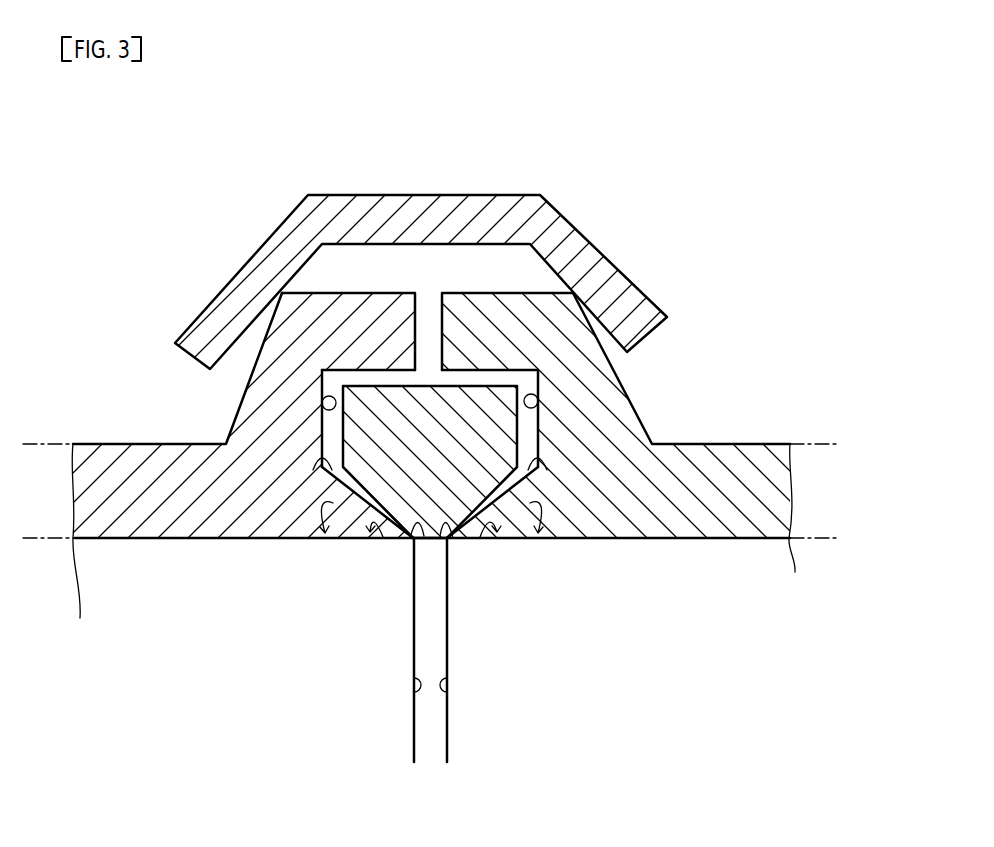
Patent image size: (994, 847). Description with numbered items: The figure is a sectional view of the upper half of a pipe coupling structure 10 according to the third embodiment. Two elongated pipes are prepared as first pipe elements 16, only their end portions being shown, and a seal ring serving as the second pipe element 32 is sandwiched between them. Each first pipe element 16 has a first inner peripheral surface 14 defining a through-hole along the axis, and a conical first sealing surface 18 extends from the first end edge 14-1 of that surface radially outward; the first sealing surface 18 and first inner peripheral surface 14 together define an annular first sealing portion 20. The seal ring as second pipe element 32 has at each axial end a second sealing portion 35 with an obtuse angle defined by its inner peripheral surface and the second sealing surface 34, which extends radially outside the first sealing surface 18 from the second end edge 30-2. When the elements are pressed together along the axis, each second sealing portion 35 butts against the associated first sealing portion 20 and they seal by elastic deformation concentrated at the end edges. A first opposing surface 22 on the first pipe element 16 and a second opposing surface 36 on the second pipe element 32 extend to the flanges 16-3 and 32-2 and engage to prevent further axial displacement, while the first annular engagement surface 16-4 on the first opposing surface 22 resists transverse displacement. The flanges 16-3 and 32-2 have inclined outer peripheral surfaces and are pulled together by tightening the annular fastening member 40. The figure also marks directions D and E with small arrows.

The pipe coupling structure 10 is at (531, 102).
The annular fastening member 40 is at (562, 174).
The second pipe element 32 is at (469, 503).
The flange 32-2 is at (497, 292).
The second end edge 30-2 is at (413, 726).
The first opposing surface 22 is at (322, 437).
The second opposing surface 36 is at (325, 405).
The first pipe element 16 is at (146, 428).
The flange 16-3 is at (373, 290).
The first annular engagement surface 16-4 is at (352, 378).
The first sealing surface 18 is at (313, 470).
The first inner peripheral surface 14 is at (110, 540).
The first end edge 14-1 is at (414, 690).
The second sealing surface 34 is at (338, 540).
The first sealing portion 20 is at (400, 540).
The second sealing portion 35 is at (413, 542).
The direction D is at (318, 540).
The direction E is at (377, 540).